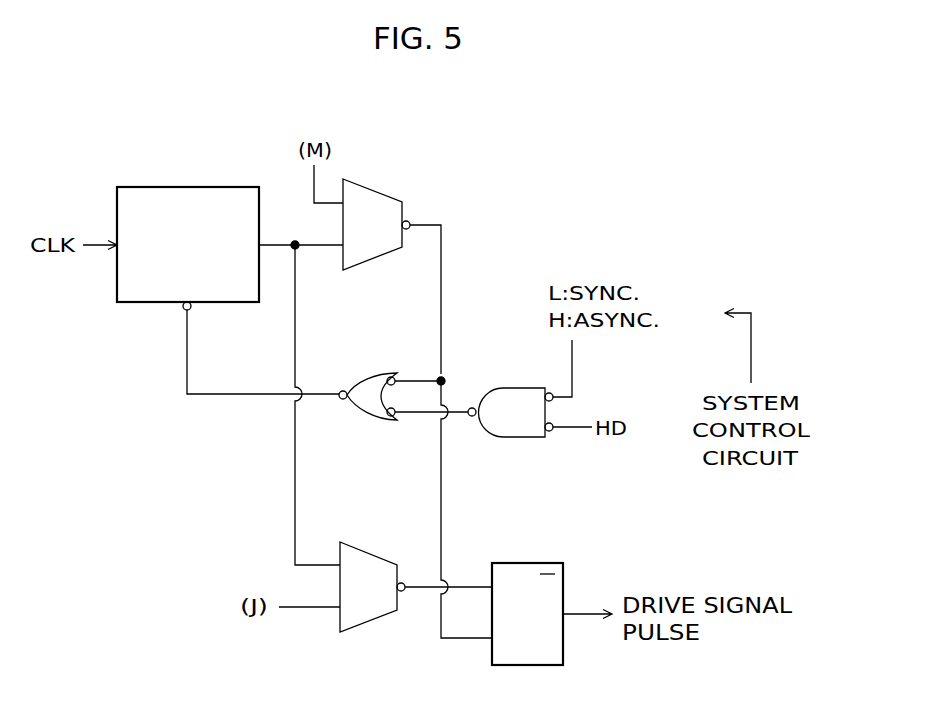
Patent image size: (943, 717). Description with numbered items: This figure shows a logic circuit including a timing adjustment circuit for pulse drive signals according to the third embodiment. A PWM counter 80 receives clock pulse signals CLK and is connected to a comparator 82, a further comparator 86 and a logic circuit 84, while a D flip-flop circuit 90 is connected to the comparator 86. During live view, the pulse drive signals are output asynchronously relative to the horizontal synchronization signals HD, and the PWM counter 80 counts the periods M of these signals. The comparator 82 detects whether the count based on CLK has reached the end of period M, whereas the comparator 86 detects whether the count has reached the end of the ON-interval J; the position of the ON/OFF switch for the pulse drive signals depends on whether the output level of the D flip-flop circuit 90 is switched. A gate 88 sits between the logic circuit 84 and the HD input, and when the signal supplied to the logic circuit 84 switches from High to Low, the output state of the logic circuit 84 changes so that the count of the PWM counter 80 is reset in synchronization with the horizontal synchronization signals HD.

The PWM counter 80 is at (188, 187).
The comparator 82 is at (384, 195).
The logic circuit 84 is at (380, 372).
The comparator 86 is at (378, 552).
The NAND gate 88 is at (516, 388).
The D flip-flop circuit 90 is at (527, 563).